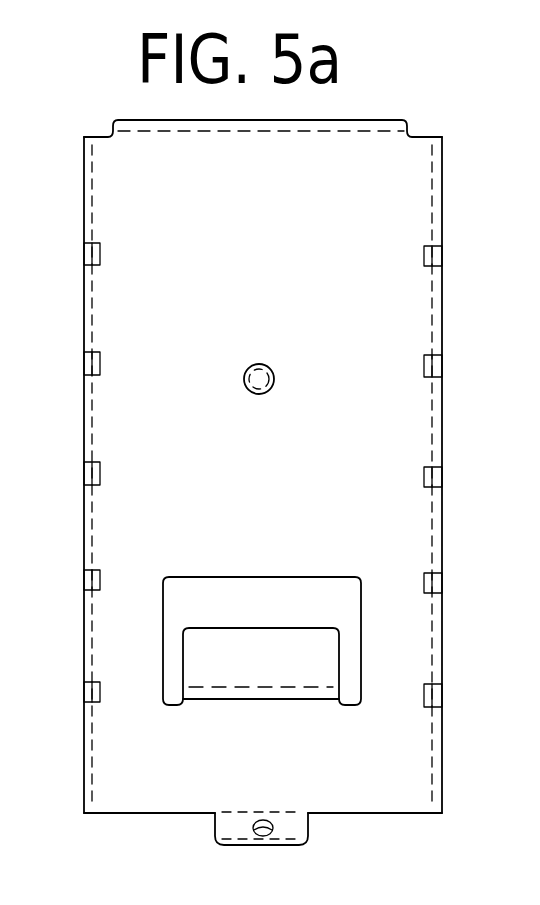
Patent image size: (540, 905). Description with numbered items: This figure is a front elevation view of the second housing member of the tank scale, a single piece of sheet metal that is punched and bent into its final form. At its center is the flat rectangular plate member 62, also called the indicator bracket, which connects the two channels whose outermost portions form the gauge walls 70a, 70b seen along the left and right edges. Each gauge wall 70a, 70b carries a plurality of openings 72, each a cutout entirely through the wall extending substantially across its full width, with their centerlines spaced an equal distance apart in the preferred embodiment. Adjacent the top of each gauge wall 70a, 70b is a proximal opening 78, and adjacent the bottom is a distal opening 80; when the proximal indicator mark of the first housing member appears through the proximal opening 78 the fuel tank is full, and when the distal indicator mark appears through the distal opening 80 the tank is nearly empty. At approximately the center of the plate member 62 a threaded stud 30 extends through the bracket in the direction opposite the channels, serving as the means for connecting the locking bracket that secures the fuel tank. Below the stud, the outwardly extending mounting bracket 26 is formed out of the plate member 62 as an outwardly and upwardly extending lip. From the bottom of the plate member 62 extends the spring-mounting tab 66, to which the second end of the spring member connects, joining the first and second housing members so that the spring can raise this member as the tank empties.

The plate member 62 is at (262, 303).
The gauge wall 70a is at (84, 212).
The gauge wall 70b is at (442, 207).
The proximal opening 78 is at (84, 254).
The openings 72 is at (84, 364).
The distal opening 80 is at (84, 692).
The threaded stud 30 is at (271, 389).
The mounting bracket 26 is at (237, 663).
The spring-mounting tab 66 is at (268, 845).